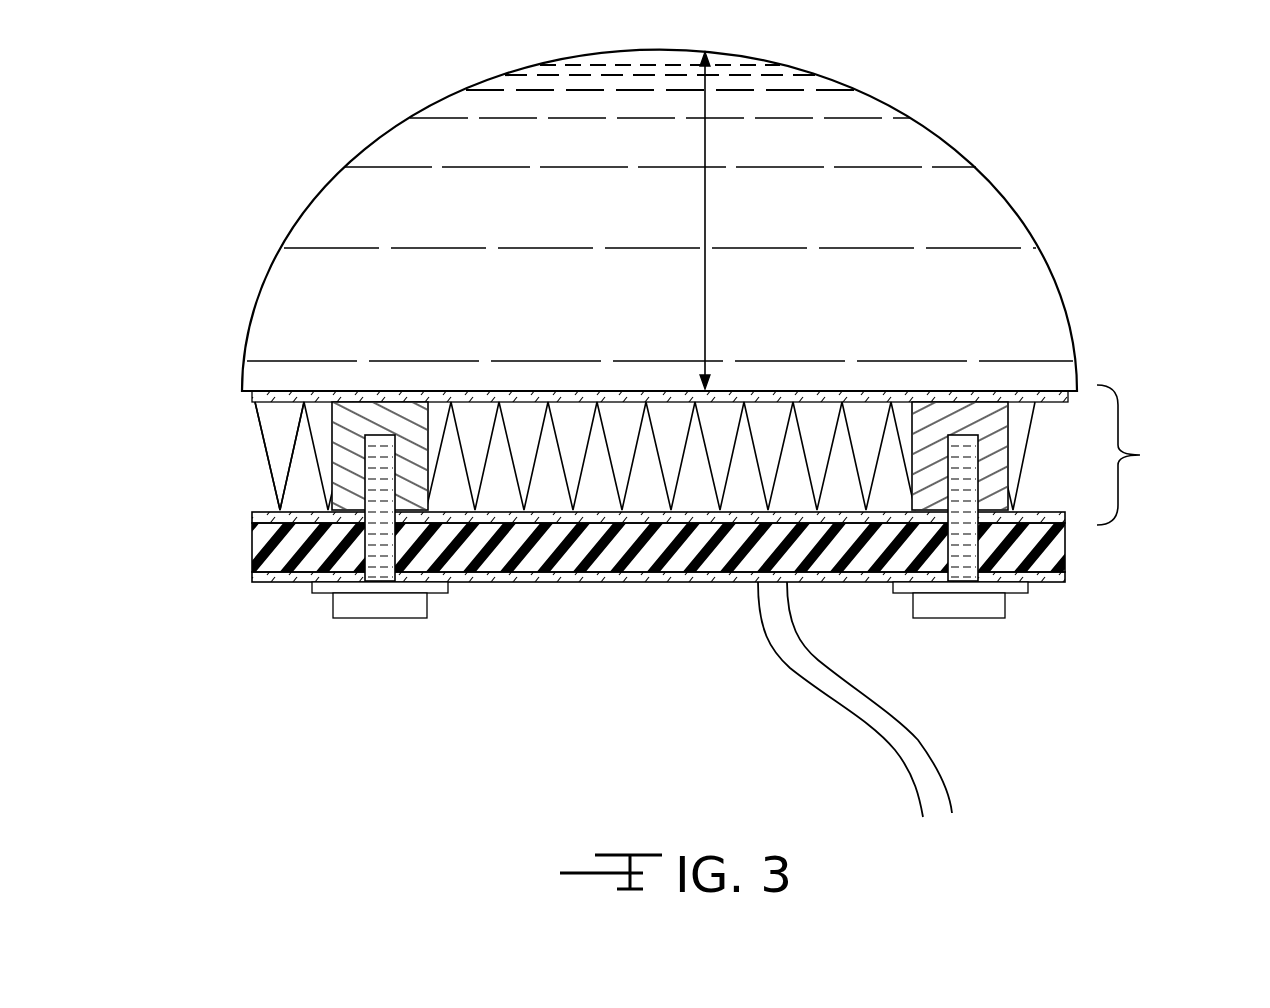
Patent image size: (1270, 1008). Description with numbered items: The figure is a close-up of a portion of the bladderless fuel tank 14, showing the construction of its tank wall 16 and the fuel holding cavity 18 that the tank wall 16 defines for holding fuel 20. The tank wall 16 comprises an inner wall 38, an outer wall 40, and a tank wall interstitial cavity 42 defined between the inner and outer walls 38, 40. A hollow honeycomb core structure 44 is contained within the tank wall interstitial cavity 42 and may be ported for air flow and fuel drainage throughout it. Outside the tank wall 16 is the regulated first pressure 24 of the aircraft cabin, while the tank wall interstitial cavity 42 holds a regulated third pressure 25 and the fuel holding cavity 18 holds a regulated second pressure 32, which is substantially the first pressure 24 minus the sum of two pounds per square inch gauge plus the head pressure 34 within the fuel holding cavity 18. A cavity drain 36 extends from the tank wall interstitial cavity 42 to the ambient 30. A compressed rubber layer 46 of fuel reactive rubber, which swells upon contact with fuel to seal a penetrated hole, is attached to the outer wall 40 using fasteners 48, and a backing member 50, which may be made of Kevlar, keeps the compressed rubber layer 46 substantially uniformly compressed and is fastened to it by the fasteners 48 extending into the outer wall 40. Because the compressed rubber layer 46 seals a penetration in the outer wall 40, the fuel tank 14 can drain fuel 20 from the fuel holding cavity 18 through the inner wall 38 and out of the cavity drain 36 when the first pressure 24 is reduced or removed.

The fuel tank 14 is at (288, 186).
The tank wall 16 is at (1140, 455).
The fuel holding cavity 18 is at (877, 210).
The fuel 20 is at (768, 197).
The first pressure 24 is at (607, 612).
The third pressure 25 is at (293, 452).
The ambient 30 is at (698, 640).
The second pressure 32 is at (427, 193).
The head pressure 34 is at (705, 249).
The cavity drain 36 is at (902, 772).
The inner wall 38 is at (1028, 402).
The outer wall 40 is at (1055, 515).
The tank wall interstitial cavity 42 is at (1028, 468).
The honeycomb core structure 44 is at (887, 435).
The compressed rubber layer 46 is at (1065, 543).
The fasteners 48 is at (345, 618).
The backing member 50 is at (517, 582).